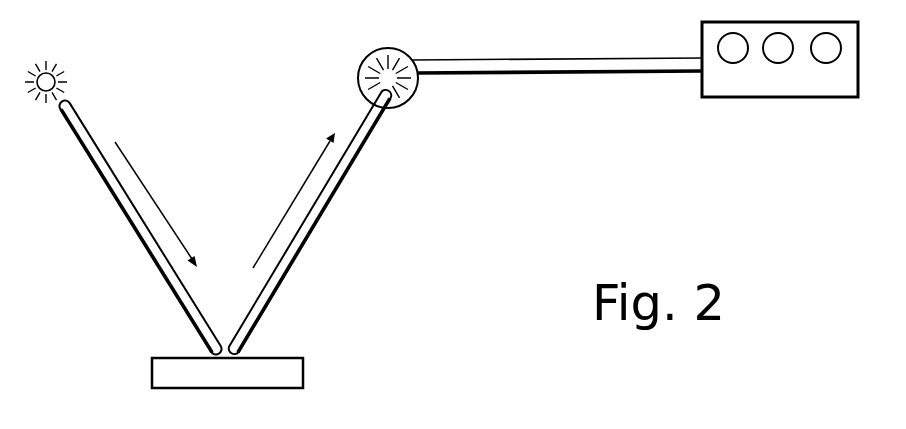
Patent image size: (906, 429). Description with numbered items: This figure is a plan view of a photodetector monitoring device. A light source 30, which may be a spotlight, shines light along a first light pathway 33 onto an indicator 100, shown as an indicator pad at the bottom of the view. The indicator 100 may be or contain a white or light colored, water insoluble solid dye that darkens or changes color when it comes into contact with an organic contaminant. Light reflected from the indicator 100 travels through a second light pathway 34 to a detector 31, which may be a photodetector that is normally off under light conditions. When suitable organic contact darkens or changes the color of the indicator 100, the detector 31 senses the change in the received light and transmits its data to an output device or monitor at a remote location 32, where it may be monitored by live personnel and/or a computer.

The light source 30 is at (68, 82).
The detector 31 is at (358, 78).
The remote location 32 is at (747, 97).
The first light pathway 33 is at (132, 228).
The second light pathway 34 is at (320, 215).
The indicator 100 is at (303, 373).